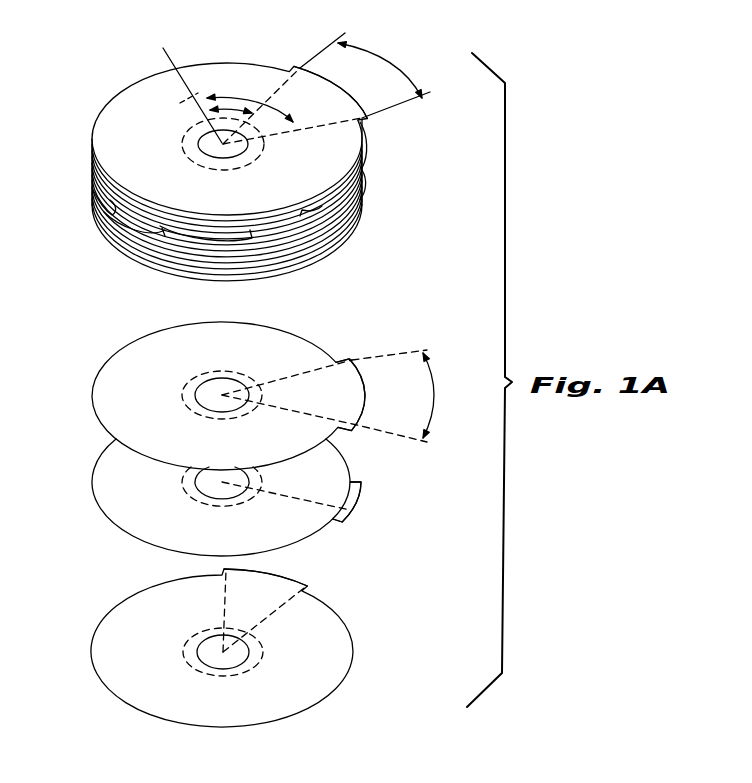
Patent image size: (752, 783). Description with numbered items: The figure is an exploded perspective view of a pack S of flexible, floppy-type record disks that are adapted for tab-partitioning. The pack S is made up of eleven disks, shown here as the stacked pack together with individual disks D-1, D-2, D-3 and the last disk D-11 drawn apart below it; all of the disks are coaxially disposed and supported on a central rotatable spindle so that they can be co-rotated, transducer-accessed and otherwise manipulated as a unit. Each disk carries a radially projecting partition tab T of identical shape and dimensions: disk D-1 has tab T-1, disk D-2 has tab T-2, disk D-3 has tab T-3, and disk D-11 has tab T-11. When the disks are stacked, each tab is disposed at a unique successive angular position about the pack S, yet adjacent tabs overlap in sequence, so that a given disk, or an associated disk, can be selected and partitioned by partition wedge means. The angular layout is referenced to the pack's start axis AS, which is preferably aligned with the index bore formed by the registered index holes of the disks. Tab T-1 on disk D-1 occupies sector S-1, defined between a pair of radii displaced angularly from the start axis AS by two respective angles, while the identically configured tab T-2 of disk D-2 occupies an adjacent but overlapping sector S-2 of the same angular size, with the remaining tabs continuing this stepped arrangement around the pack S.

The pack S is at (66, 138).
The disk D-1 is at (108, 103).
The disk D-2 is at (126, 356).
The disk D-3 is at (112, 460).
The disk D-11 is at (123, 599).
The partition tab T is at (90, 176).
The tab T-1 is at (332, 86).
The tab T-2 is at (370, 152).
The tab T-3 is at (358, 187).
The tab T-11 is at (292, 578).
The start axis AS is at (174, 87).
The sector S-1 is at (392, 66).
The sector S-2 is at (432, 408).